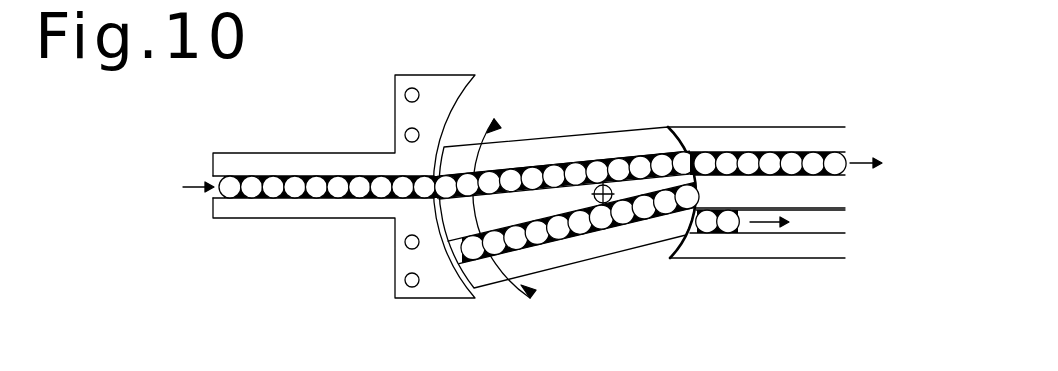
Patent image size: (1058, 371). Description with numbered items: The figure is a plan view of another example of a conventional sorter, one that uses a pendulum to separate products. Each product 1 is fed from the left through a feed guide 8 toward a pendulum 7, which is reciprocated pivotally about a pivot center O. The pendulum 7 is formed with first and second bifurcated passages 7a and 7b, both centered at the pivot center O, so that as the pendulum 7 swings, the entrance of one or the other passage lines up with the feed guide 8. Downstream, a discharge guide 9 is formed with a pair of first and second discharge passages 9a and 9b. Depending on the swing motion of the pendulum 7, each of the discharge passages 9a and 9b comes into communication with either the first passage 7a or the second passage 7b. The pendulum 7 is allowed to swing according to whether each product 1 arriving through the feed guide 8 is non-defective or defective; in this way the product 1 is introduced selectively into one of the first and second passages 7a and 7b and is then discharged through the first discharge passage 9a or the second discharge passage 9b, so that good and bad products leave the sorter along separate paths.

The product 1 is at (297, 182).
The feed guide 8 is at (312, 221).
The pendulum 7 is at (525, 122).
The first bifurcated passage 7a is at (548, 172).
The second bifurcated passage 7b is at (518, 243).
The pivot center O is at (606, 185).
The discharge guide 9 is at (797, 125).
The first discharge passage 9a is at (735, 158).
The second discharge passage 9b is at (798, 224).